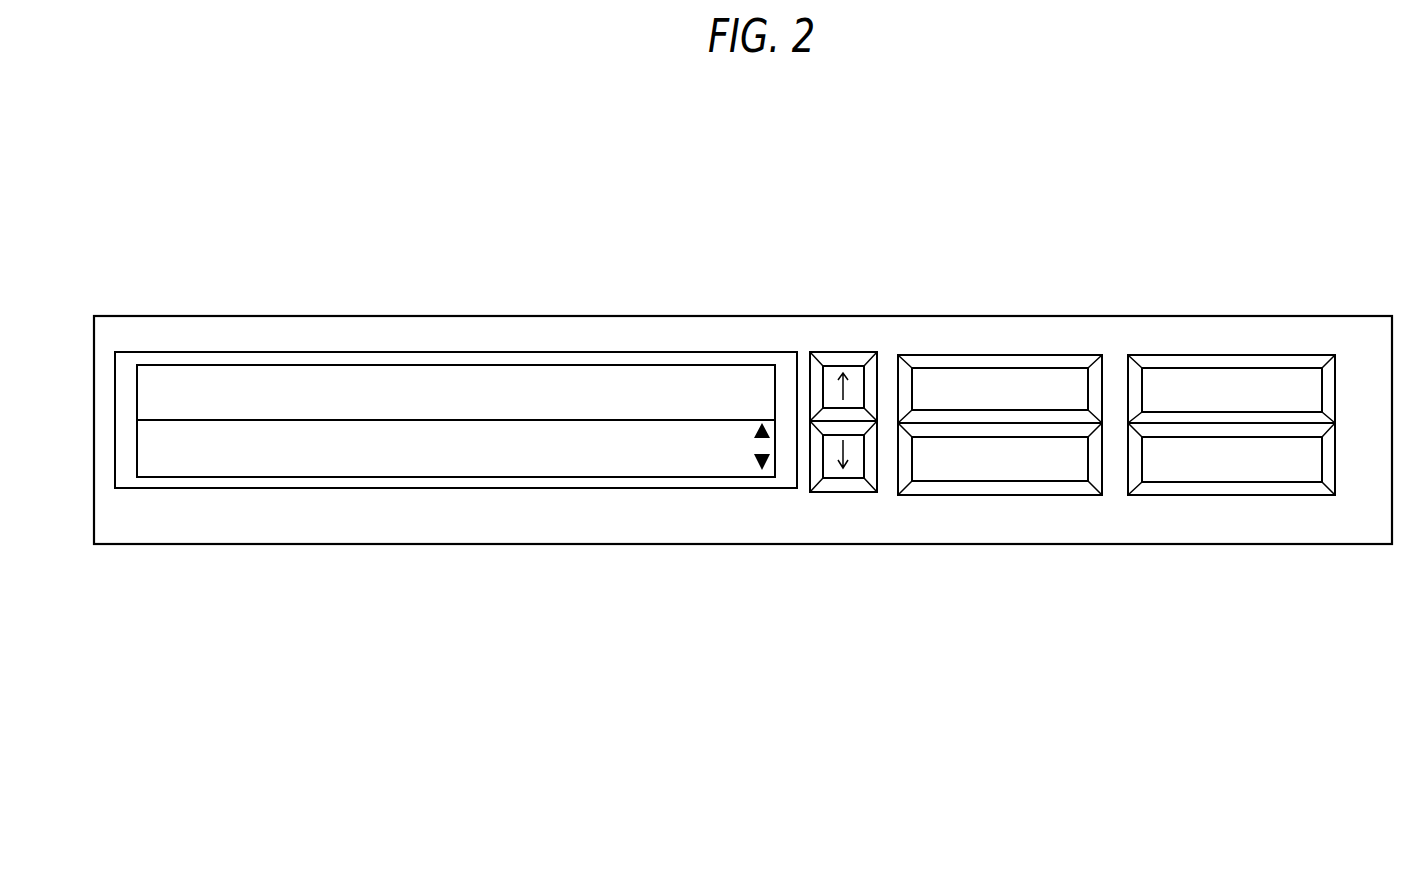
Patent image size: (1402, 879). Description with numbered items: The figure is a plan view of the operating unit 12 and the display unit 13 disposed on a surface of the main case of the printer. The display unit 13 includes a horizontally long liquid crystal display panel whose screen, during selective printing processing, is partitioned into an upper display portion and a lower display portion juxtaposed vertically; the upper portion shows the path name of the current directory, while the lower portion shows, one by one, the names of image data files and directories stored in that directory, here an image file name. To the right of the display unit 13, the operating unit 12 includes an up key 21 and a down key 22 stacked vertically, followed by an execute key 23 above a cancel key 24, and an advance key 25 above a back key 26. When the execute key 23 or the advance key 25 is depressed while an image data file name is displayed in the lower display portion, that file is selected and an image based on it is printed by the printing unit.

The operating unit 12 is at (1143, 289).
The display unit 13 is at (418, 352).
The up key 21 is at (845, 352).
The down key 22 is at (838, 492).
The execute key 23 is at (1008, 355).
The cancel key 24 is at (997, 495).
The advance key 25 is at (1233, 355).
The back key 26 is at (1230, 495).